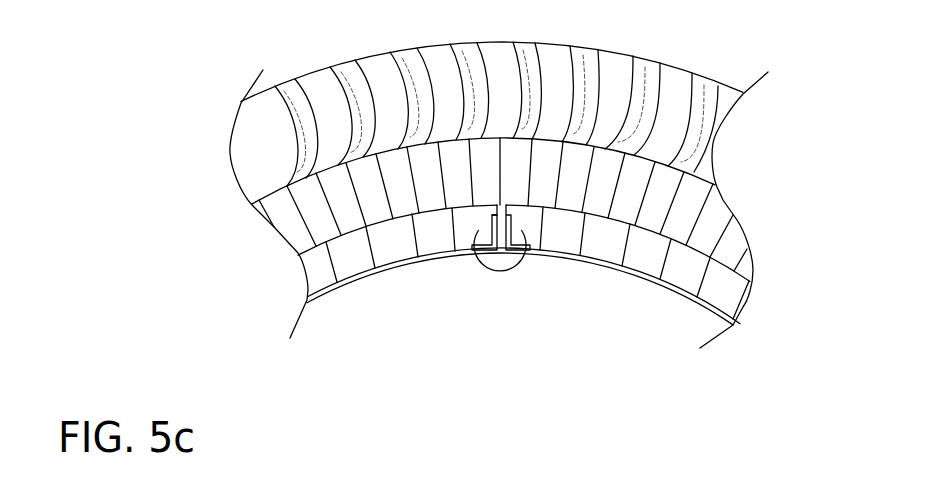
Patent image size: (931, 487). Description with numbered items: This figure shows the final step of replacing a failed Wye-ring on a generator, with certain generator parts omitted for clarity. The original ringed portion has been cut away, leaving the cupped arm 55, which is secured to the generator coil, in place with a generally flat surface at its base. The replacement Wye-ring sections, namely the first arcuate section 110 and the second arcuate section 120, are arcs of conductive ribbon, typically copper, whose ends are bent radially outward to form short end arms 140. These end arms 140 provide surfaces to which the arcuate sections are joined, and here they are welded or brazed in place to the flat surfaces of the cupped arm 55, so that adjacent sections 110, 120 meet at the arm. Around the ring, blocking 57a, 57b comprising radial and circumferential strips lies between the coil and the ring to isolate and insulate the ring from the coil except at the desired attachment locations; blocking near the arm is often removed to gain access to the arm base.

The blocking 57a is at (713, 213).
The blocking 57b is at (737, 298).
The first arcuate section 110 is at (357, 280).
The second arcuate section 120 is at (632, 276).
The end arms 140 is at (500, 274).
The cupped arm 55 is at (495, 207).